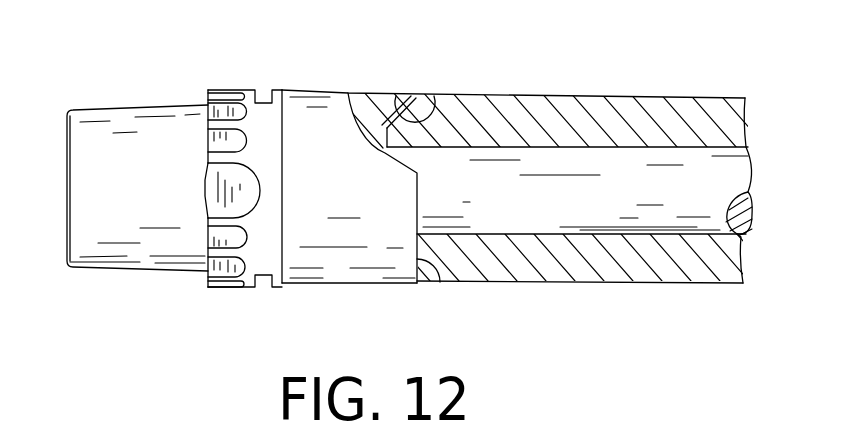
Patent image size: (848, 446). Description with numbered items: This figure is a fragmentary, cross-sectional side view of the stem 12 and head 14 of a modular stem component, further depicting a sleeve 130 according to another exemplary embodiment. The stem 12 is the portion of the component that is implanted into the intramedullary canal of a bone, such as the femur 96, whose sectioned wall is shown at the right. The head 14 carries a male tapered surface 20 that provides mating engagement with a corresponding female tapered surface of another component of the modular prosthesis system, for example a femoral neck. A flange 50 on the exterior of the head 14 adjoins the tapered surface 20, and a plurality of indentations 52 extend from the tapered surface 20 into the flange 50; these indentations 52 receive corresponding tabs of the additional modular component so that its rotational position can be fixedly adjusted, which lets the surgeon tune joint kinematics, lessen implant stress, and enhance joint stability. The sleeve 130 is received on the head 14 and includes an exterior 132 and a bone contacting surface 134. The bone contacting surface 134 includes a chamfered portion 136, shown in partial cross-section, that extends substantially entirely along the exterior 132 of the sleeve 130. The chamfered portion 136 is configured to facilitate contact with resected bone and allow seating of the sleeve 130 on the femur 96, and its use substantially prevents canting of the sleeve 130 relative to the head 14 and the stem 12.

The stem 12 is at (740, 170).
The head 14 is at (84, 75).
The tapered surface 20 is at (150, 258).
The flange 50 is at (237, 79).
The indentations 52 is at (221, 116).
The femur 96 is at (513, 110).
The sleeve 130 is at (311, 78).
The exterior 132 is at (340, 260).
The bone contacting surface 134 is at (438, 279).
The chamfered portion 136 is at (428, 116).